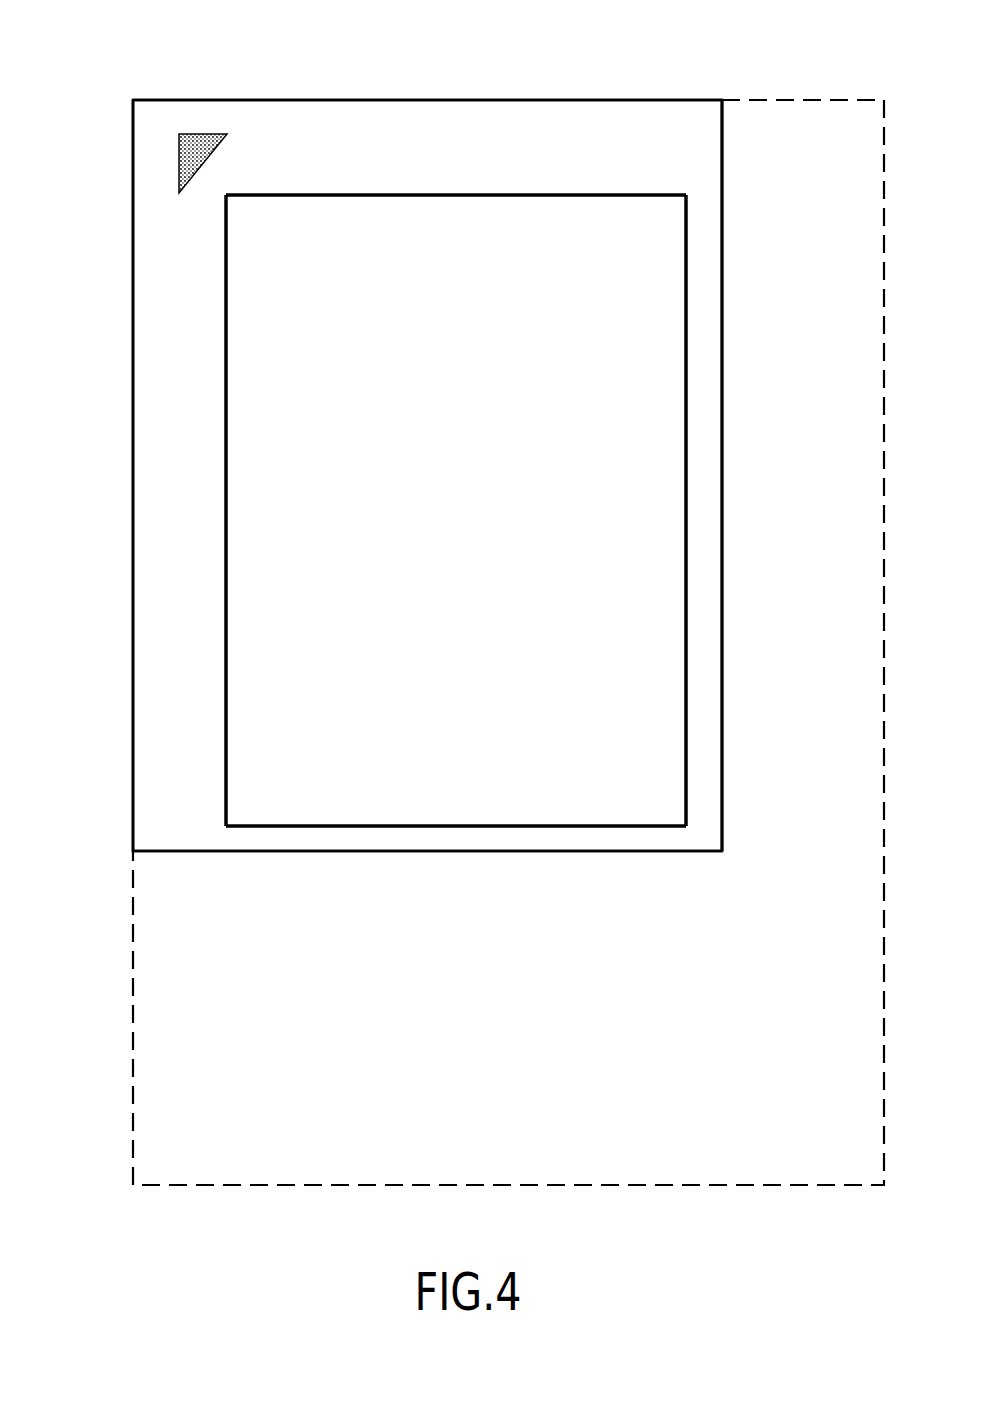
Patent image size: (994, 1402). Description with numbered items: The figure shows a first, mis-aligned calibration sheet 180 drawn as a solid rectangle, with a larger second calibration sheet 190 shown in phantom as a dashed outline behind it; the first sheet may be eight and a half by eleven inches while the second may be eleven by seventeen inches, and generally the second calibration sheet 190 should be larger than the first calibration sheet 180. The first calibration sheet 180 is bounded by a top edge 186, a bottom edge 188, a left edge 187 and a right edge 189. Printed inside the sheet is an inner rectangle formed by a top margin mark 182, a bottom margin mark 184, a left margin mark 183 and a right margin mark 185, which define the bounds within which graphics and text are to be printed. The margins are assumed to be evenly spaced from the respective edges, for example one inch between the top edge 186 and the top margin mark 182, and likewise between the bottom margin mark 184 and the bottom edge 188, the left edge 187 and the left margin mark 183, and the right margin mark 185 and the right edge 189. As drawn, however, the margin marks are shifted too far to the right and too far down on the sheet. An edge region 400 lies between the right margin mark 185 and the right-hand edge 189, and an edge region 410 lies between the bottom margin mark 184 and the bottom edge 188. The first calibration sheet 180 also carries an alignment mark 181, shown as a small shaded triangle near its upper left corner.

The first calibration sheet 180 is at (572, 88).
The alignment mark 181 is at (214, 148).
The top margin mark 182 is at (350, 197).
The left margin mark 183 is at (226, 425).
The bottom margin mark 184 is at (402, 825).
The right margin mark 185 is at (686, 425).
The top edge 186 is at (350, 102).
The left edge 187 is at (133, 425).
The bottom edge 188 is at (402, 853).
The right edge 189 is at (722, 425).
The second calibration sheet 190 is at (812, 88).
The edge region 400 is at (702, 580).
The edge region 410 is at (546, 838).